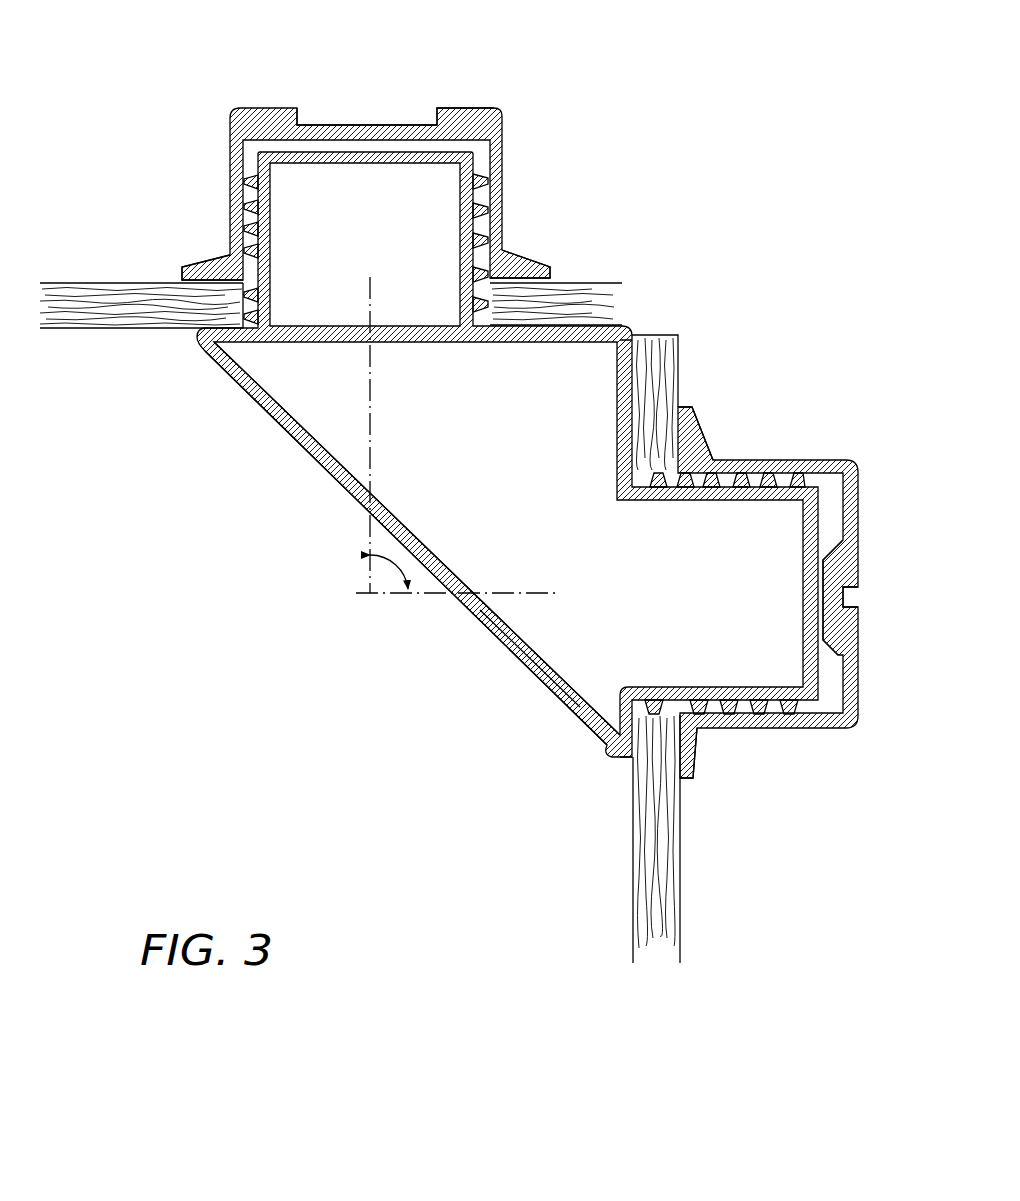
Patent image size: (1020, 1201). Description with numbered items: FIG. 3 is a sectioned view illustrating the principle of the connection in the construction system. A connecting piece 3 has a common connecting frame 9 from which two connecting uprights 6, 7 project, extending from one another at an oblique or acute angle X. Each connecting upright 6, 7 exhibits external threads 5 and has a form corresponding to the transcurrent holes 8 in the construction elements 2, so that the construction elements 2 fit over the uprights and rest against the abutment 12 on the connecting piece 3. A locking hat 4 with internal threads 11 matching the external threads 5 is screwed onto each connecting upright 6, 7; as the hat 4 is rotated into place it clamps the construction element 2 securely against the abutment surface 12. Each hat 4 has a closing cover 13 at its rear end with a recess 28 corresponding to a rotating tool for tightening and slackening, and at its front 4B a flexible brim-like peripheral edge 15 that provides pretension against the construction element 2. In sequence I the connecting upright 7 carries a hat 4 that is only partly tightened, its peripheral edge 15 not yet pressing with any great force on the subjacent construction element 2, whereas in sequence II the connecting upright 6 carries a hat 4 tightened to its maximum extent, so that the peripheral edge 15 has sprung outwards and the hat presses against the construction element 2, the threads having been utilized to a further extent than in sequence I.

The construction element 2 is at (158, 326).
The connecting piece 3 is at (525, 629).
The locking hat 4 is at (529, 400).
The front of the hat 4B is at (703, 757).
The external thread 5 is at (243, 185).
The connecting upright 6 is at (773, 493).
The connecting upright 7 is at (484, 443).
The transcurrent hole 8 is at (670, 708).
The connecting frame 9 is at (574, 667).
The internal thread 11 is at (243, 225).
The abutment 12 is at (609, 326).
The closing cover 13 is at (453, 115).
The peripheral edge 15 is at (527, 265).
The recess 28 is at (370, 123).
The angle X is at (396, 565).
The sequence I is at (197, 37).
The sequence II is at (761, 837).